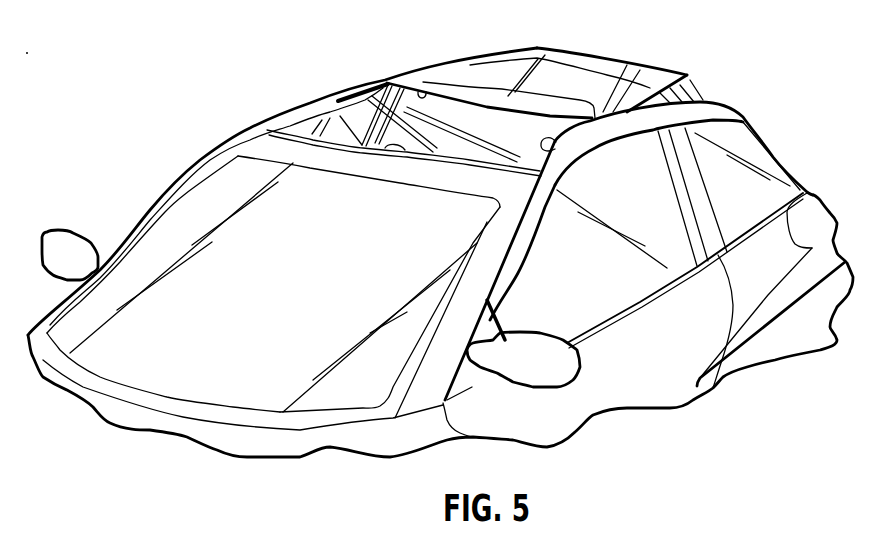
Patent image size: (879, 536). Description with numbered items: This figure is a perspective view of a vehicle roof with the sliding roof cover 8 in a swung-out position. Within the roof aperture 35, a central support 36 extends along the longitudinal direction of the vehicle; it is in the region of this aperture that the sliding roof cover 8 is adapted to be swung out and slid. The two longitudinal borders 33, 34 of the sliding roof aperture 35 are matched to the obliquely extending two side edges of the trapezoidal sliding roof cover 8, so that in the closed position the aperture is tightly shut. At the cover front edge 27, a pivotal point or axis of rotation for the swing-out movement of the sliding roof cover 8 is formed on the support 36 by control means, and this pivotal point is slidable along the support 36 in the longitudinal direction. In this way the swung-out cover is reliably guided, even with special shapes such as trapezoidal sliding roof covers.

The sliding roof cover 8 is at (651, 73).
The cover front edge 27 is at (423, 90).
The longitudinal border 33 is at (347, 104).
The longitudinal border 34 is at (583, 162).
The roof aperture 35 is at (455, 150).
The central support 36 is at (457, 128).